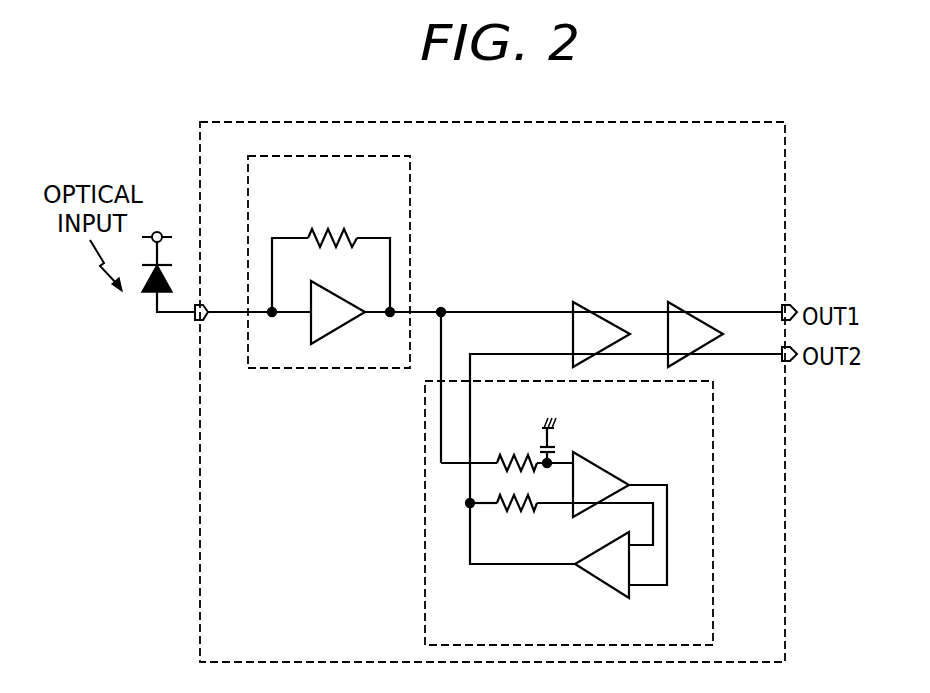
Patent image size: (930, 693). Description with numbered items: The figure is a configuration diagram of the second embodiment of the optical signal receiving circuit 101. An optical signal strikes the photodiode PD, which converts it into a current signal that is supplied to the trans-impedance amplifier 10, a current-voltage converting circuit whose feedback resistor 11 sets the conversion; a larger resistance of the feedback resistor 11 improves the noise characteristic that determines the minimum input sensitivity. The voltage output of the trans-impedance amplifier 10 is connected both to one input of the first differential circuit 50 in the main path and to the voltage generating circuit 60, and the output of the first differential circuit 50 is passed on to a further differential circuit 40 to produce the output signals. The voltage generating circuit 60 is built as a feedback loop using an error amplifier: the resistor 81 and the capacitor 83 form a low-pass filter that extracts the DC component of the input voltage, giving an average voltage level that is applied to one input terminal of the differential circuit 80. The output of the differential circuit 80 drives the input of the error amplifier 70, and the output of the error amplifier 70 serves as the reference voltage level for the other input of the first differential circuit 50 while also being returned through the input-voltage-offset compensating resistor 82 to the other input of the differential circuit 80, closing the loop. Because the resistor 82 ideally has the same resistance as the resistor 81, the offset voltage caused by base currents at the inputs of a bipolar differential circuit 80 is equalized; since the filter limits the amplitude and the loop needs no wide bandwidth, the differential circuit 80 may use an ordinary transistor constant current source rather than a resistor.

The optical signal receiving circuit 101 is at (199, 483).
The photodiode PD is at (152, 293).
The trans-impedance amplifier 10 is at (344, 294).
The feedback resistor 11 is at (334, 222).
The first differential circuit 50 is at (587, 305).
The differential circuit 40 is at (681, 305).
The voltage generating circuit 60 is at (536, 513).
The error amplifier 70 is at (632, 590).
The differential circuit 80 is at (590, 463).
The resistor 81 is at (503, 448).
The input-voltage-offset compensating resistor 82 is at (514, 510).
The capacitor 83 is at (557, 442).